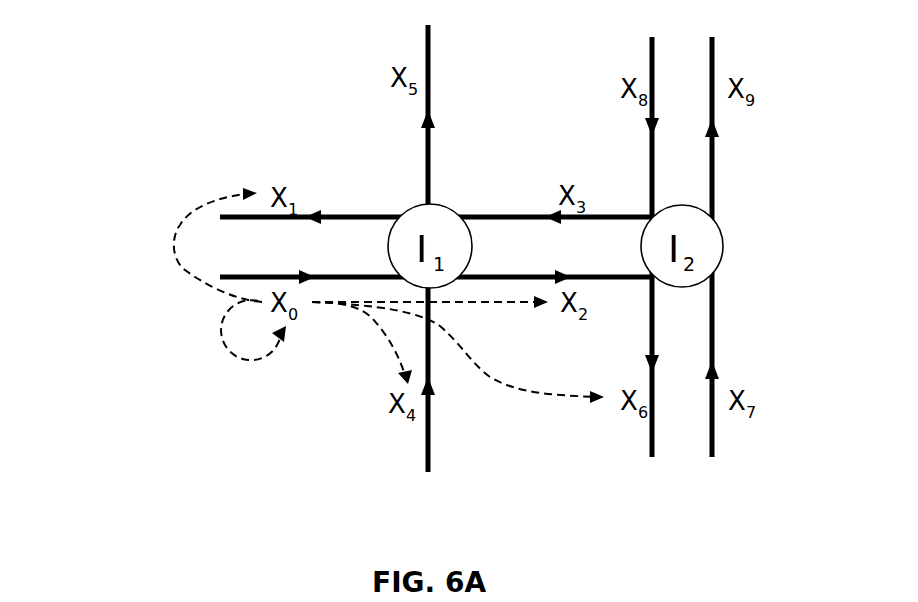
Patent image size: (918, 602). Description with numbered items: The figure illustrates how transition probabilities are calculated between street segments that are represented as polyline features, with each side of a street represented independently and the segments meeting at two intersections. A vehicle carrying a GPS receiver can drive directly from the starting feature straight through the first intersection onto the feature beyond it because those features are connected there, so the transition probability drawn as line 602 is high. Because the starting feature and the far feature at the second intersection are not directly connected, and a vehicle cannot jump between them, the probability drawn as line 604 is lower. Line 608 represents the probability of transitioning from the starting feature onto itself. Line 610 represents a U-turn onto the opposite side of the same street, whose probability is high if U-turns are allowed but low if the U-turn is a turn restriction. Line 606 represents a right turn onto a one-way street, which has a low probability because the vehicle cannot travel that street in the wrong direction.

The line representing transition probability from X0 to X2 602 is at (483, 302).
The line representing transition probability from X0 to X6 604 is at (555, 397).
The line representing transition probability from X0 to X4 606 is at (377, 323).
The line representing transition probability from X0 onto itself 608 is at (253, 362).
The line representing transition probability from X0 to X1 610 is at (174, 252).